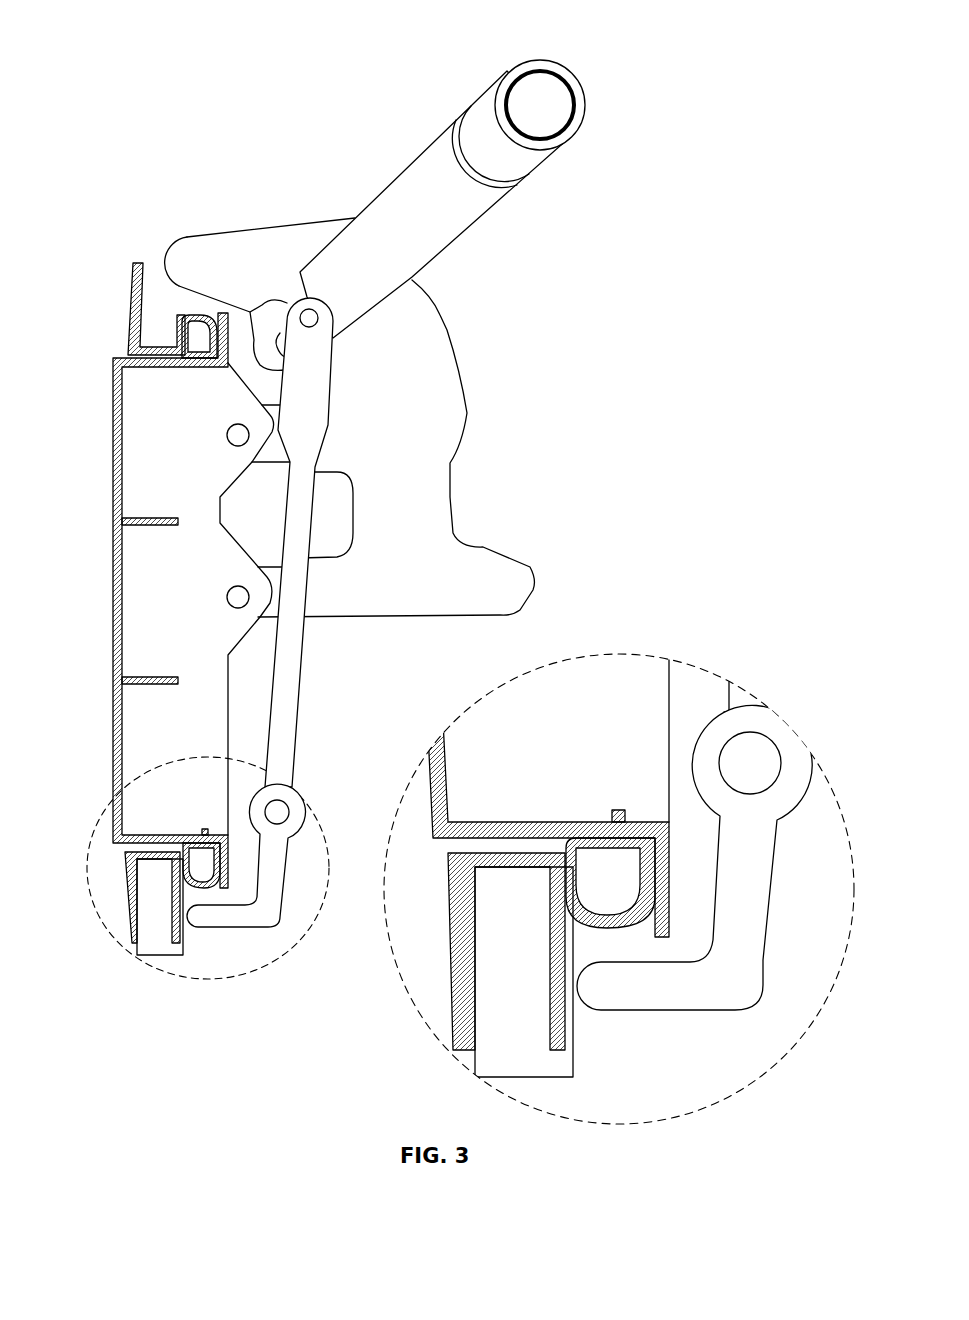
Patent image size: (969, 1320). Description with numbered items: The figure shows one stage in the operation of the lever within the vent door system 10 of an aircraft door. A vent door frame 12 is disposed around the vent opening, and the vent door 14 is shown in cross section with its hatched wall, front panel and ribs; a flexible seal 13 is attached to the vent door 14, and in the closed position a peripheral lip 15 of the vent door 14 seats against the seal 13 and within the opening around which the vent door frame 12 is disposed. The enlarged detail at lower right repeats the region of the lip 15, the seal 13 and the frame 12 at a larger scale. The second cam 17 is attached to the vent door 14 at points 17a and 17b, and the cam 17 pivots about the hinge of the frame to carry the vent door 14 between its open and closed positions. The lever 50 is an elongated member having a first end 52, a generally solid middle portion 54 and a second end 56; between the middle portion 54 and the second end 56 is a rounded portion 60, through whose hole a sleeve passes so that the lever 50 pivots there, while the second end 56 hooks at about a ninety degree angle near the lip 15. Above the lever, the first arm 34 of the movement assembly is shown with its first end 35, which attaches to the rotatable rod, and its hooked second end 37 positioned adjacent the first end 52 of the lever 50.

The vent door system 10 is at (593, 42).
The vent door frame 12 is at (130, 291).
The flexible seal 13 is at (205, 316).
The vent door 14 is at (106, 630).
The peripheral lip 15 is at (226, 879).
The second cam 17 is at (409, 526).
The attachment point 17a is at (226, 438).
The attachment point 17b is at (226, 600).
The first arm 34 is at (481, 218).
The first end 35 is at (590, 87).
The second end 37 is at (262, 352).
The lever 50 is at (304, 633).
The first end 52 is at (300, 296).
The middle portion 54 is at (315, 515).
The second end 56 is at (258, 930).
The rounded portion 60 is at (302, 828).